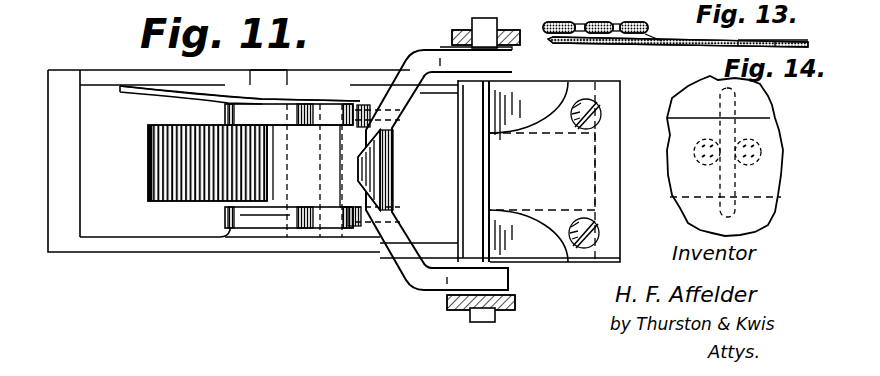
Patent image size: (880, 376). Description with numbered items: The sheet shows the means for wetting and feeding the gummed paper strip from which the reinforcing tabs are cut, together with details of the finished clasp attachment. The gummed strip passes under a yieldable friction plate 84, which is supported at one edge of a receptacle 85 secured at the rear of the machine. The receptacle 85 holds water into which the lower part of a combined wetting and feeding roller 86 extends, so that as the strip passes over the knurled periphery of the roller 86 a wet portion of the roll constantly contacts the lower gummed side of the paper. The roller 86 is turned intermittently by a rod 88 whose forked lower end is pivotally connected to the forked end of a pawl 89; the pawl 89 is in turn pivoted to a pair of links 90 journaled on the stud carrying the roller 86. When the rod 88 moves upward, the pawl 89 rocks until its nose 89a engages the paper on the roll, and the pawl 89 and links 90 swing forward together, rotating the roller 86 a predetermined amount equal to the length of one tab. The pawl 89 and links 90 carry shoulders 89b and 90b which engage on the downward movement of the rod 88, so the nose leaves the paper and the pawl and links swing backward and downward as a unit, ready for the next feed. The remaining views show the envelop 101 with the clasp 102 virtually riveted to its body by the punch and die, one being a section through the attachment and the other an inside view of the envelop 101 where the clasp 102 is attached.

In FIG. 11, the yieldable friction plate 84 is at (539, 171).
In FIG. 11, the receptacle 85 is at (352, 100).
In FIG. 11, the combined wetting and feeding roller 86 is at (147, 160).
In FIG. 11, the rod 88 is at (466, 26).
In FIG. 11, the pawl 89 is at (415, 283).
In FIG. 11, the nose 89a is at (358, 181).
In FIG. 11, the shoulder 89b is at (366, 113).
In FIG. 11, the links 90 is at (298, 104).
In FIG. 11, the shoulder 90b is at (378, 98).
In FIG. 13, the envelop 101 is at (660, 49).
In FIG. 14, the envelop 101 is at (672, 185).
In FIG. 13, the clasp 102 is at (610, 21).
In FIG. 14, the clasp 102 is at (740, 182).